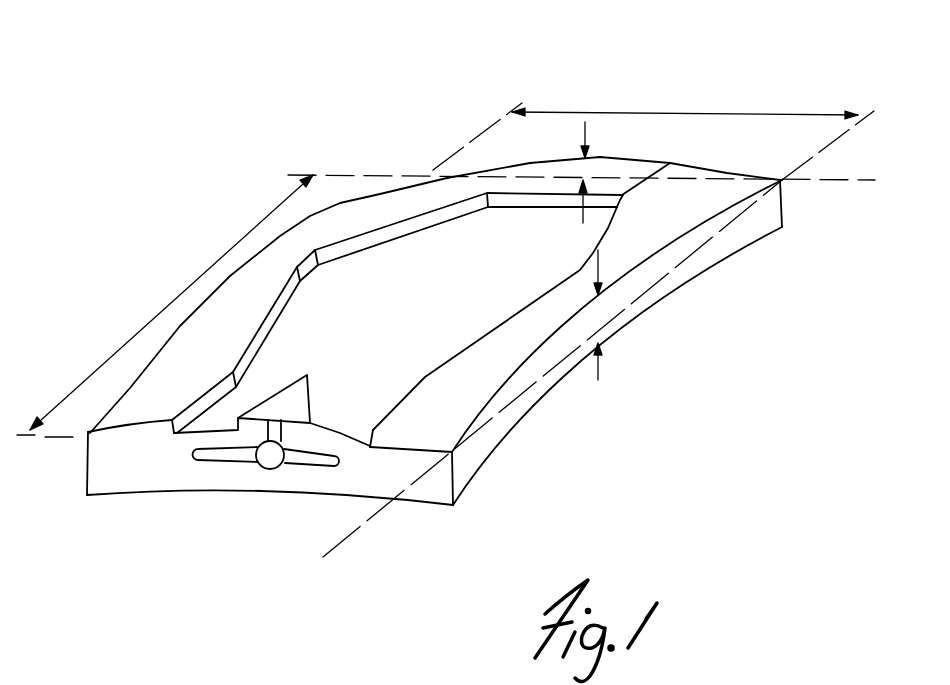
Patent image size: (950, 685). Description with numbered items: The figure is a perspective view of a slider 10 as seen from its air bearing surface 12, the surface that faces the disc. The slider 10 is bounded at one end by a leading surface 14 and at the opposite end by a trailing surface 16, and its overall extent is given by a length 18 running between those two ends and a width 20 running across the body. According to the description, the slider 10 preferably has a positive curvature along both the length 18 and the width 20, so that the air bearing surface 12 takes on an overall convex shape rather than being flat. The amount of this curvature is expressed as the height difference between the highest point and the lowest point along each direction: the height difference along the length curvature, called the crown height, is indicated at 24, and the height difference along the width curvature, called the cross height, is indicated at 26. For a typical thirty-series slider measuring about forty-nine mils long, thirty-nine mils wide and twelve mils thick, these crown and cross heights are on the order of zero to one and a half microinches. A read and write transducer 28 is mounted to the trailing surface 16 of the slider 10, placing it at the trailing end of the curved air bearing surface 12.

The slider 10 is at (373, 101).
The air bearing surface 12 is at (232, 290).
The leading surface 14 is at (708, 168).
The trailing surface 16 is at (380, 467).
The length 18 is at (155, 318).
The width 20 is at (710, 112).
The crown height 24 is at (599, 366).
The cross height 26 is at (586, 123).
The read and write transducer 28 is at (270, 458).